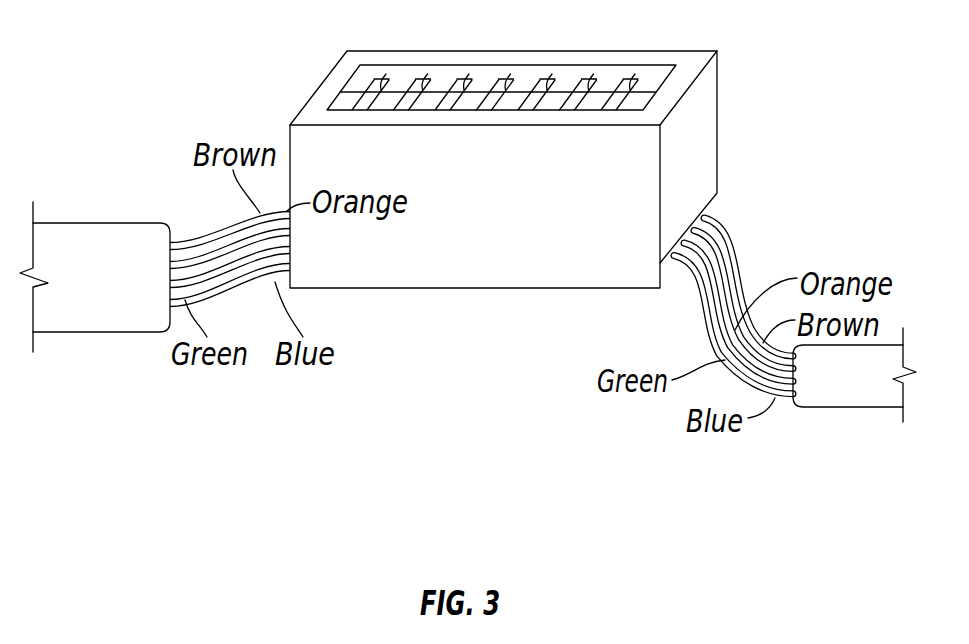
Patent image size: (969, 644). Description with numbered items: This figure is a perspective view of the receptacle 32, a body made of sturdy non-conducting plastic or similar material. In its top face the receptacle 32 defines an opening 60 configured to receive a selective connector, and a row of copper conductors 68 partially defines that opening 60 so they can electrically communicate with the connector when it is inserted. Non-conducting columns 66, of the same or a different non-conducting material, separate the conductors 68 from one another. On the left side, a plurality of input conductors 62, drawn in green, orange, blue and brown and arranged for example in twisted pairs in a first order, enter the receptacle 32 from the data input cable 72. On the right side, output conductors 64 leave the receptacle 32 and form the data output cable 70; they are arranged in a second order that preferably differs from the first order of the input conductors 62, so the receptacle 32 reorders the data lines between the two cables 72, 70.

The receptacle 32 is at (703, 97).
The opening 60 is at (656, 70).
The input conductors 62 is at (197, 242).
The output conductors 64 is at (718, 262).
The non-conducting columns 66 is at (460, 80).
The conductors 68 is at (343, 104).
The data output cable 70 is at (808, 407).
The first cable 72 is at (110, 223).